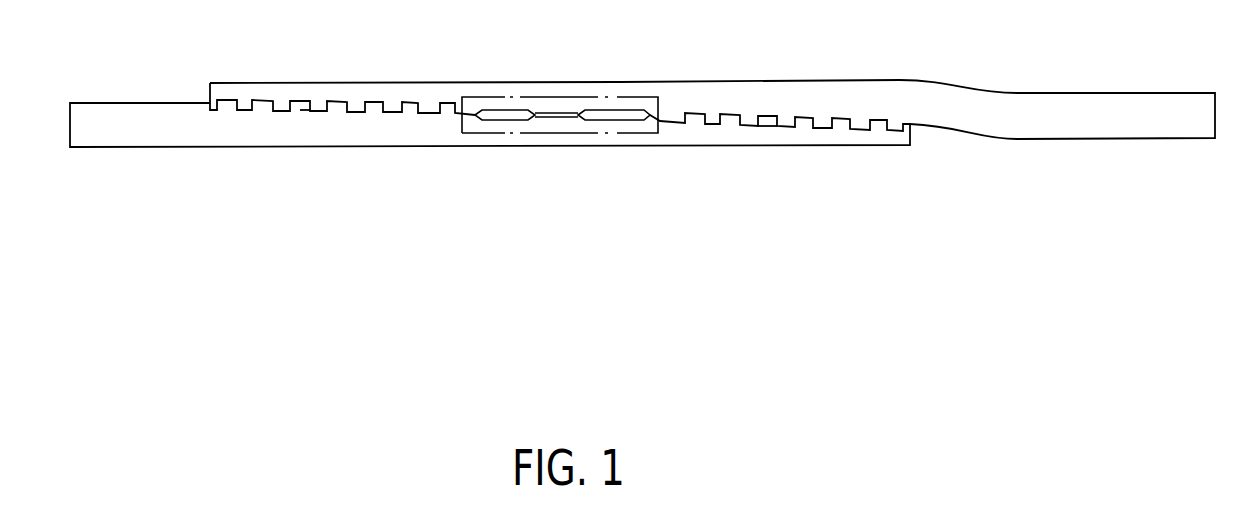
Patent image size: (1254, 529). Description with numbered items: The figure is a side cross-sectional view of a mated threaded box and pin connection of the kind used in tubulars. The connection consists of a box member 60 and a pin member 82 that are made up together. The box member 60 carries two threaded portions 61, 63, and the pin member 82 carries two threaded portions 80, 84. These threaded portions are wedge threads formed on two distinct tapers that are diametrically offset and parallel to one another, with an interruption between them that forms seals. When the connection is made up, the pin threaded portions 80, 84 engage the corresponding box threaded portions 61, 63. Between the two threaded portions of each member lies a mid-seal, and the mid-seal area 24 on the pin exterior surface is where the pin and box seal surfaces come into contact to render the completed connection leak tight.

The mid-seal area 24 is at (588, 133).
The box member 60 is at (806, 95).
The threaded portion 61 is at (318, 103).
The threaded portion 63 is at (783, 122).
The threaded portion 80 is at (332, 107).
The pin member 82 is at (828, 135).
The threaded portion 84 is at (765, 132).